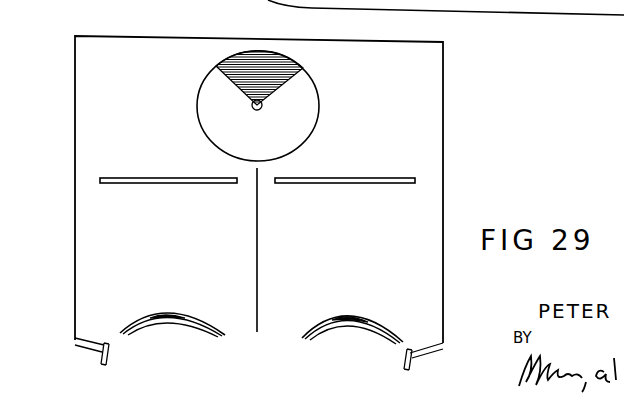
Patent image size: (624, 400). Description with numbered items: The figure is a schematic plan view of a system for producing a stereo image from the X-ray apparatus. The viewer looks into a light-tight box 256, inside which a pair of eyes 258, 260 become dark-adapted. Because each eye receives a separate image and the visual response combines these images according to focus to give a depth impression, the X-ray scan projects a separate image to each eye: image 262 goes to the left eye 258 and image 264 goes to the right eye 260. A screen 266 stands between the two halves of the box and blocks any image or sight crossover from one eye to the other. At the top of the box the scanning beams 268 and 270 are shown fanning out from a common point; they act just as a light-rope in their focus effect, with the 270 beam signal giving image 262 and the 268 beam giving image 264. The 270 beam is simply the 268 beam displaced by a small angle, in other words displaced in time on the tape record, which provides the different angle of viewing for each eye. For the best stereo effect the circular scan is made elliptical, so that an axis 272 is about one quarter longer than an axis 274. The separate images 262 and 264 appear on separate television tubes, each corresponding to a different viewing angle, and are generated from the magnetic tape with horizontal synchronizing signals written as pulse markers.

The light-tight box 256 is at (75, 75).
The eye 258 is at (197, 326).
The eye 260 is at (361, 330).
The image 262 is at (146, 184).
The image 264 is at (343, 184).
The screen 266 is at (258, 244).
The beam 268 is at (252, 93).
The beam 270 is at (259, 60).
The axis 272 is at (318, 88).
The axis 274 is at (259, 111).